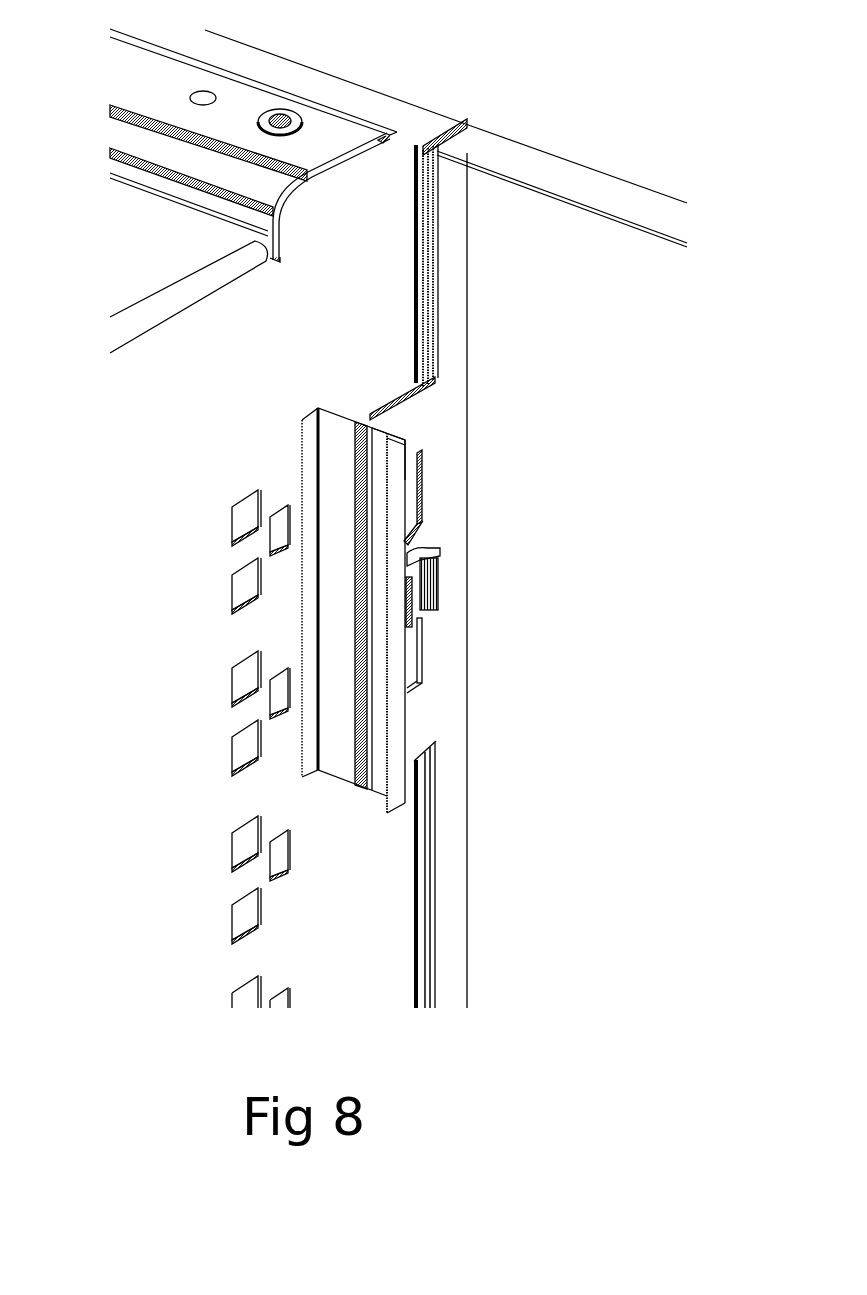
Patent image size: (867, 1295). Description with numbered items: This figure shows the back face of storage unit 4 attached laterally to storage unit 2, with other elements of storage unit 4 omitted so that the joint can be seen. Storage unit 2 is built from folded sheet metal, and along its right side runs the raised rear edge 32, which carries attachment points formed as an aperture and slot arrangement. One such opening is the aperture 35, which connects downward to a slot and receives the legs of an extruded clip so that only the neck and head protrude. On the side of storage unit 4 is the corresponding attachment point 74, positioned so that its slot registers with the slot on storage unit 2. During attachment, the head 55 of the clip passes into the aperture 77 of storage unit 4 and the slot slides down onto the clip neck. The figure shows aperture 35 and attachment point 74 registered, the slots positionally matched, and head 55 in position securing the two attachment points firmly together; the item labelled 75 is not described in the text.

The storage unit 2 is at (380, 82).
The storage unit 4 is at (586, 166).
The raised rear edge 32 is at (345, 418).
The aperture 35 is at (422, 465).
The head portion 55 is at (407, 551).
The attachment point 74 is at (422, 490).
The bracket flange 75 is at (400, 427).
The aperture 77 is at (422, 653).